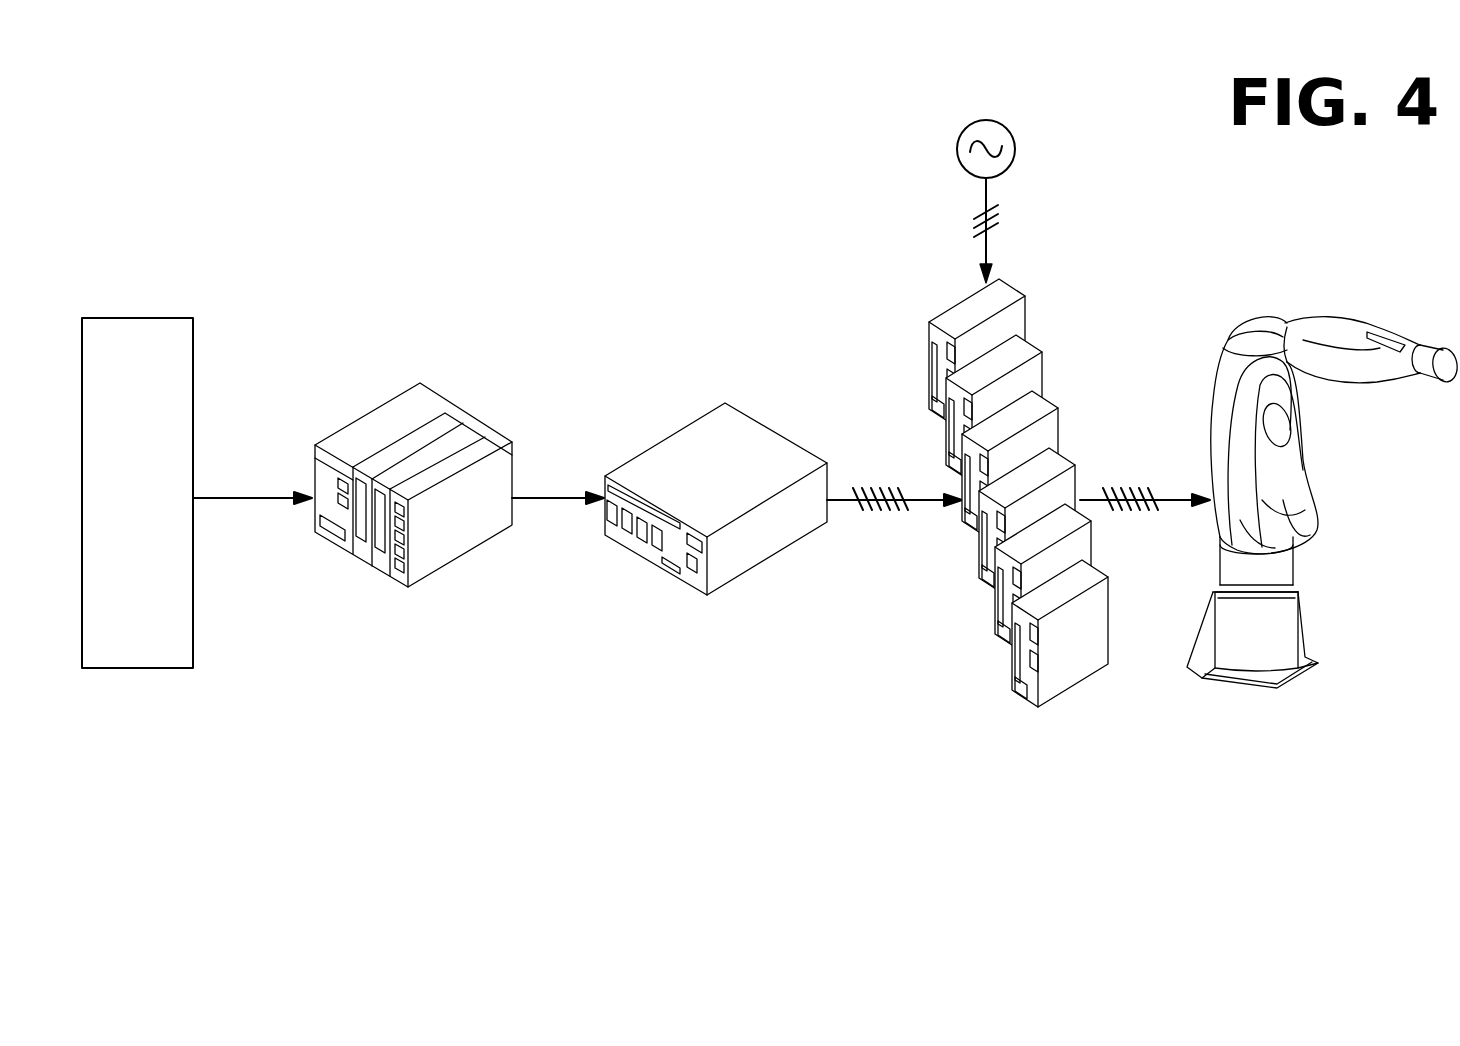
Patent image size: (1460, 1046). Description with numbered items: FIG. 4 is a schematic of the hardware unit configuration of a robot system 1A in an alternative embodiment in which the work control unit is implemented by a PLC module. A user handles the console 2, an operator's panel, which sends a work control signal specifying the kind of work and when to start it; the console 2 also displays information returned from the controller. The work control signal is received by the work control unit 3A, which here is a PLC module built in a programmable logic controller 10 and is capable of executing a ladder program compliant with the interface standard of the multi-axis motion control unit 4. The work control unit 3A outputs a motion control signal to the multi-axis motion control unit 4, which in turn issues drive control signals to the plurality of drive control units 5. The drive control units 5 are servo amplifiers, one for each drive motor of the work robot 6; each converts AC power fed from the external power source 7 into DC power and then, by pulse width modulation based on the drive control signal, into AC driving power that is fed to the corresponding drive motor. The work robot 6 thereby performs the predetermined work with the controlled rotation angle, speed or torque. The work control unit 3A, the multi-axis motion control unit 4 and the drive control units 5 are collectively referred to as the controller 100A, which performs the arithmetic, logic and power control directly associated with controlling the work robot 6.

The robot system 1A is at (380, 197).
The console 2 is at (144, 318).
The work control unit 3A is at (453, 533).
The multi-axis motion control unit 4 is at (755, 547).
The drive control units 5 is at (978, 578).
The work robot 6 is at (1290, 325).
The external power source 7 is at (988, 120).
The programmable logic controller 10 is at (383, 402).
The controller 100A is at (933, 780).